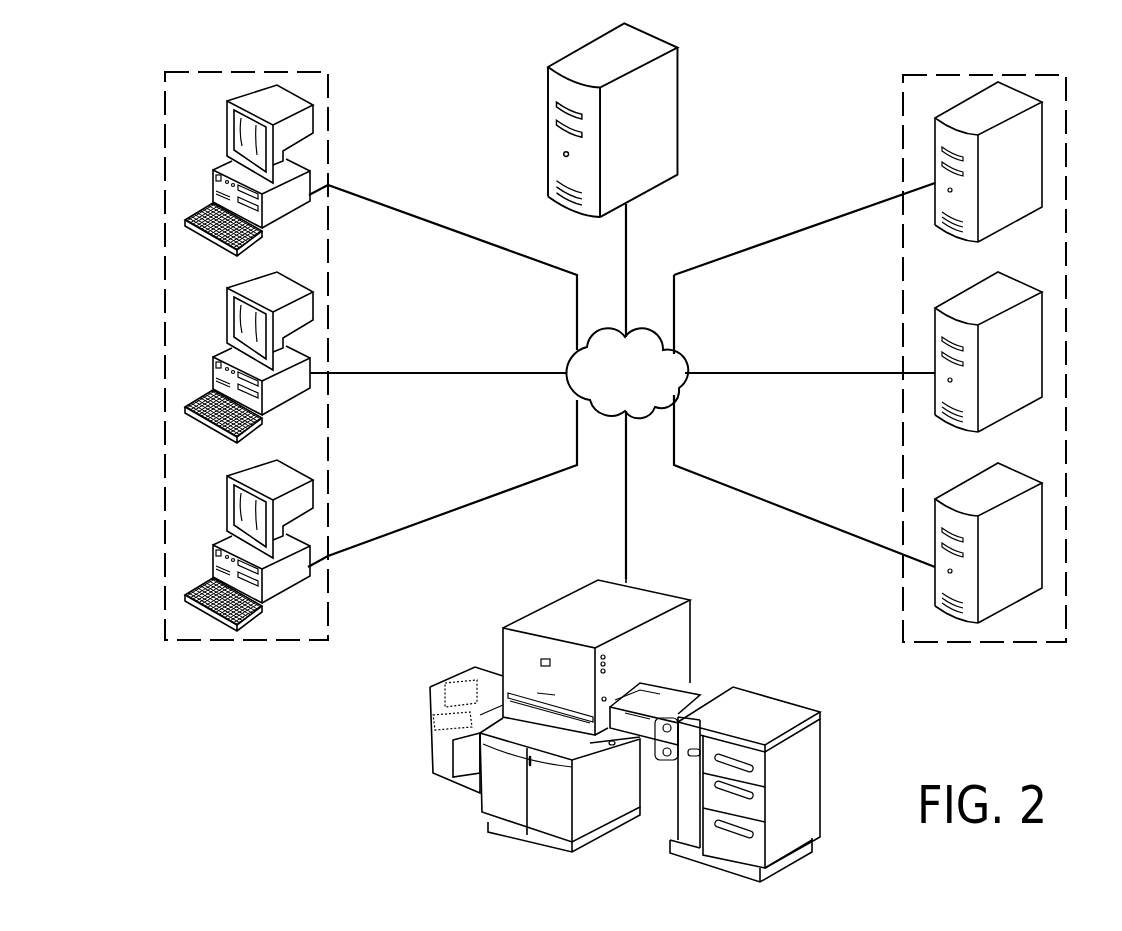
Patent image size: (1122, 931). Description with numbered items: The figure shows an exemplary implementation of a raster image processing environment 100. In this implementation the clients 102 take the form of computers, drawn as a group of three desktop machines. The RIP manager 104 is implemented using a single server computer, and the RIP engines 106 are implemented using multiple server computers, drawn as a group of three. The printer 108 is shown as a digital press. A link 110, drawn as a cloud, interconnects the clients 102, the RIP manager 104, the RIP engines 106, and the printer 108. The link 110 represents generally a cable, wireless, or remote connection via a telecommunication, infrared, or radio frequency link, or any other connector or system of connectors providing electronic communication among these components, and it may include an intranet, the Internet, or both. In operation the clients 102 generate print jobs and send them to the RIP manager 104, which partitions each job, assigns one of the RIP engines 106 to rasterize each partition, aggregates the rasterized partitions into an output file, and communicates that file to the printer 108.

The raster image processing (RIP) environment 100 is at (270, 765).
The clients 102 is at (222, 72).
The RIP manager 104 is at (668, 153).
The RIP engines 106 is at (960, 75).
The printer 108 is at (512, 638).
The link 110 is at (683, 383).